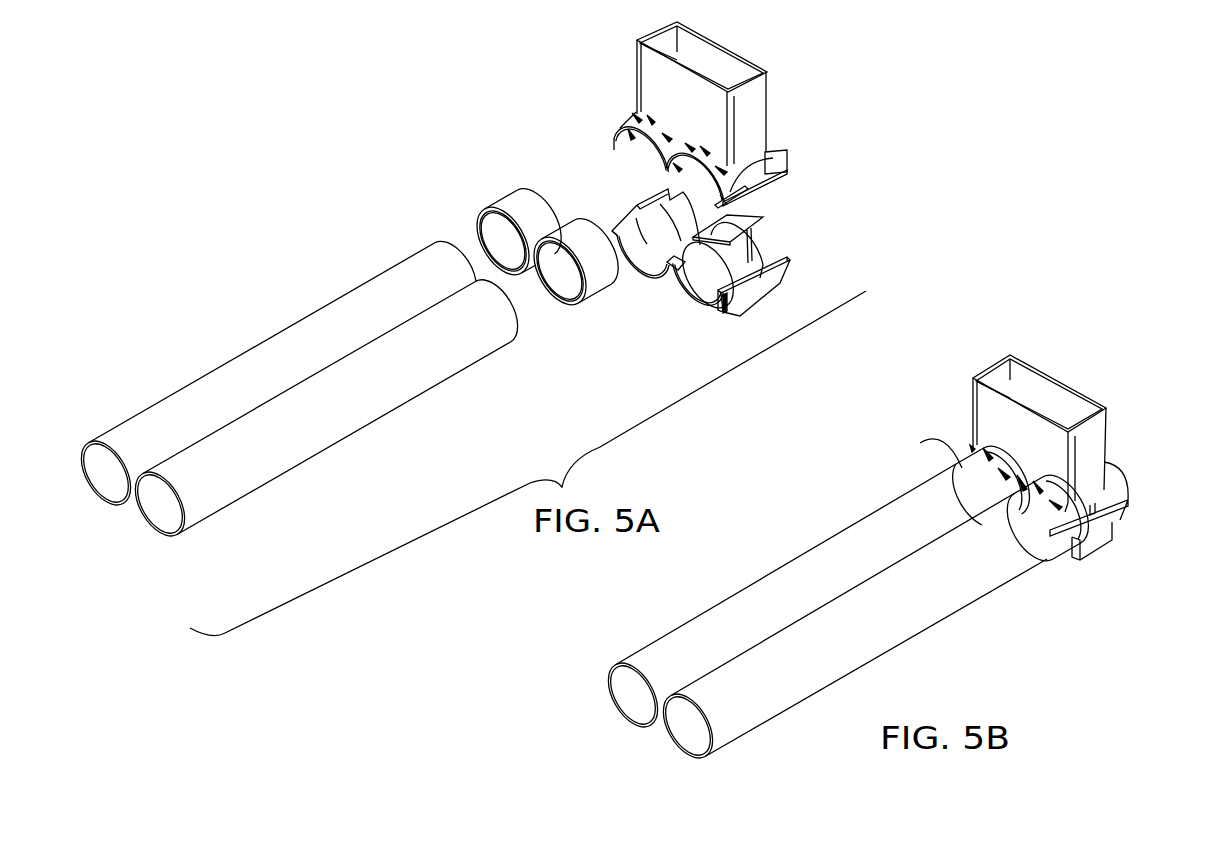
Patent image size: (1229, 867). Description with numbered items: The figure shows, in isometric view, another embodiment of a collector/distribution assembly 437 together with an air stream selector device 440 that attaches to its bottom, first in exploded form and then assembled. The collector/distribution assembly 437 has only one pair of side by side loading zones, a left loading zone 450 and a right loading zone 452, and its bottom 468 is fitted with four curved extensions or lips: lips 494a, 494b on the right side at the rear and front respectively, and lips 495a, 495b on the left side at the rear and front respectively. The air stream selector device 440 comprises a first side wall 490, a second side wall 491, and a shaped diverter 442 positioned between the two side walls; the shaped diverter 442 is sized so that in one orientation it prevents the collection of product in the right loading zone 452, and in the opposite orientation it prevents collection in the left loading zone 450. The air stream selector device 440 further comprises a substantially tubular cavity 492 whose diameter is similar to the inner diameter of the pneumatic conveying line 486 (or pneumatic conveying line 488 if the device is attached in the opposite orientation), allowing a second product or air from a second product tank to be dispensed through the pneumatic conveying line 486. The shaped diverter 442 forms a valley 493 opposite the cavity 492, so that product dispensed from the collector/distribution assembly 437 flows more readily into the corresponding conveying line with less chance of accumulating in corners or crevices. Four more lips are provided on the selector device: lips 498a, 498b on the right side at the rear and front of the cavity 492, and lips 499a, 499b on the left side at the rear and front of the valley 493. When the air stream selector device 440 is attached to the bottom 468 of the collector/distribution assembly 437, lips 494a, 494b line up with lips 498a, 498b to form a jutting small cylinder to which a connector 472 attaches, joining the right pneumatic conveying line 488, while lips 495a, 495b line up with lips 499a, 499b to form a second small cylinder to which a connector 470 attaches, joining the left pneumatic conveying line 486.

In FIG. 5A, the collector/distribution assembly 437 is at (704, 108).
In FIG. 5B, the collector/distribution assembly 437 is at (1050, 373).
In FIG. 5A, the air stream selector device 440 is at (715, 270).
In FIG. 5B, the air stream selector device 440 is at (1066, 558).
In FIG. 5A, the shaped diverter 442 is at (760, 216).
In FIG. 5A, the left loading zone 450 is at (690, 58).
In FIG. 5A, the right loading zone 452 is at (733, 82).
In FIG. 5A, the bottom 468 is at (770, 187).
In FIG. 5A, the connector 470 is at (507, 200).
In FIG. 5B, the connector 470 is at (950, 470).
In FIG. 5A, the connector 472 is at (595, 290).
In FIG. 5B, the connector 472 is at (1046, 557).
In FIG. 5A, the pneumatic conveying line 486 is at (288, 330).
In FIG. 5B, the pneumatic conveying line 486 is at (860, 516).
In FIG. 5A, the pneumatic conveying line 488 is at (354, 412).
In FIG. 5B, the pneumatic conveying line 488 is at (893, 630).
In FIG. 5A, the first side wall 490 is at (632, 210).
In FIG. 5A, the second side wall 491 is at (762, 300).
In FIG. 5A, the tubular cavity 492 is at (678, 300).
In FIG. 5A, the valley 493 is at (618, 232).
In FIG. 5A, the lip 494a is at (775, 140).
In FIG. 5A, the lip 494b is at (760, 165).
In FIG. 5A, the lip 495a is at (636, 70).
In FIG. 5A, the lip 495b is at (626, 118).
In FIG. 5A, the lip 498a is at (787, 282).
In FIG. 5A, the lip 498b is at (703, 327).
In FIG. 5A, the lip 499a is at (722, 196).
In FIG. 5A, the lip 499b is at (642, 268).